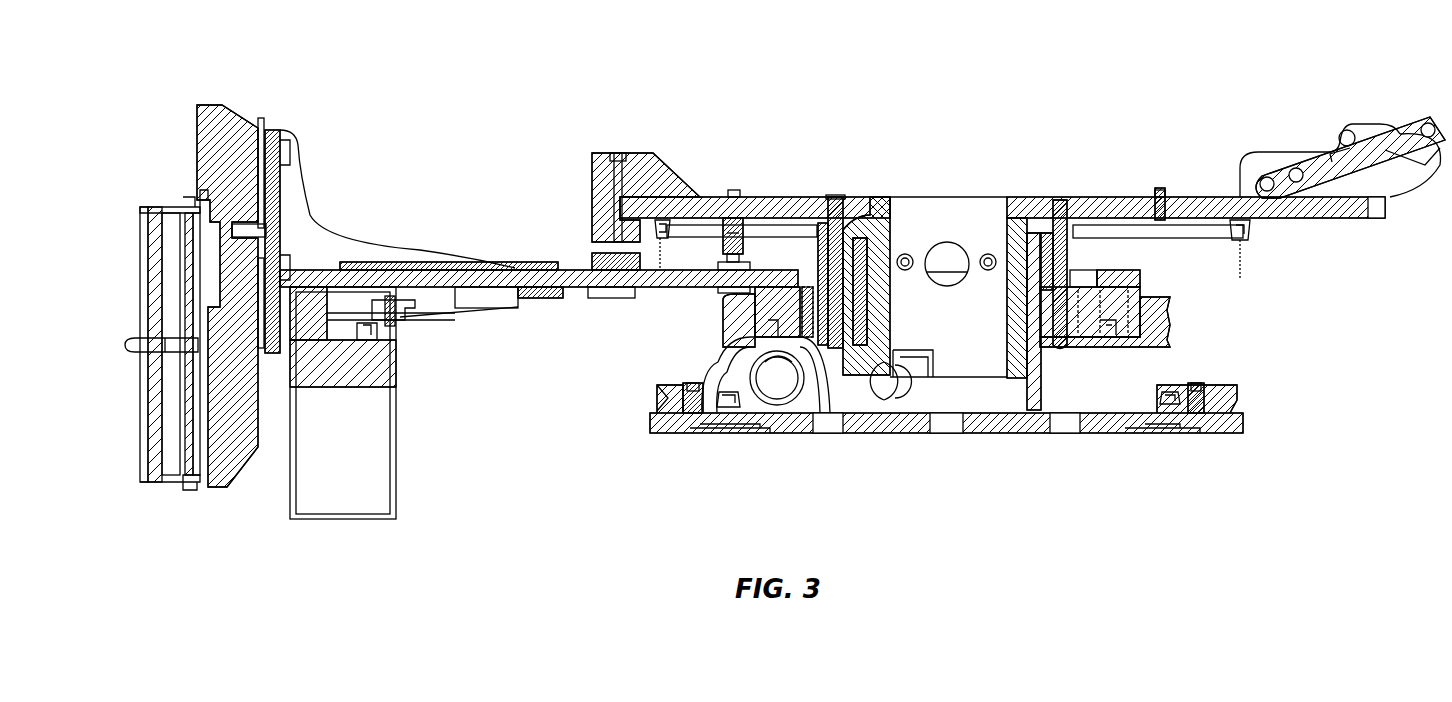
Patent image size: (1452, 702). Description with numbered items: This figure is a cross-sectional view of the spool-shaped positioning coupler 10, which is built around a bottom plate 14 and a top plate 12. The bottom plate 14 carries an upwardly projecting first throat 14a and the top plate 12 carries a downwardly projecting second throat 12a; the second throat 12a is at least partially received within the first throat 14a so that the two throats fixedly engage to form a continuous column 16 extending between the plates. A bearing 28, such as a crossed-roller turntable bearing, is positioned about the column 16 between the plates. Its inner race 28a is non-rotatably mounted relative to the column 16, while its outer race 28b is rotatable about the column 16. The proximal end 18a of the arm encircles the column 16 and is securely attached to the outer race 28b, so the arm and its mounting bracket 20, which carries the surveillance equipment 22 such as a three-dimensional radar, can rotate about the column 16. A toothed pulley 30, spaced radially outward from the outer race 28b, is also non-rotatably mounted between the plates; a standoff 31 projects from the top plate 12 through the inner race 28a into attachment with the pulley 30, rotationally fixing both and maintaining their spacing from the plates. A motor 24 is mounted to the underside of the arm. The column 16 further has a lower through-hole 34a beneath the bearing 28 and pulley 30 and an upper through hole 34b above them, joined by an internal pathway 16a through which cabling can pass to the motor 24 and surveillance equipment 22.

The positioning coupler 10 is at (500, 46).
The surveillance equipment 22 is at (168, 138).
The mounting bracket 20 is at (278, 190).
The motor 24 is at (400, 410).
The top plate 12 is at (1078, 195).
The second throat 12a is at (1010, 262).
The standoff 31 is at (832, 248).
The bearing 28 is at (843, 332).
The outer race 28b is at (773, 313).
The inner race 28a is at (1075, 315).
The toothed pulley 30 is at (718, 330).
The upper through hole 34b is at (945, 240).
The internal pathway 16a is at (966, 327).
The lower through-hole 34a is at (908, 372).
The column 16 is at (1038, 342).
The first throat 14a is at (1048, 378).
The proximal end of the arm 18a is at (1135, 272).
The bottom plate 14 is at (1108, 430).